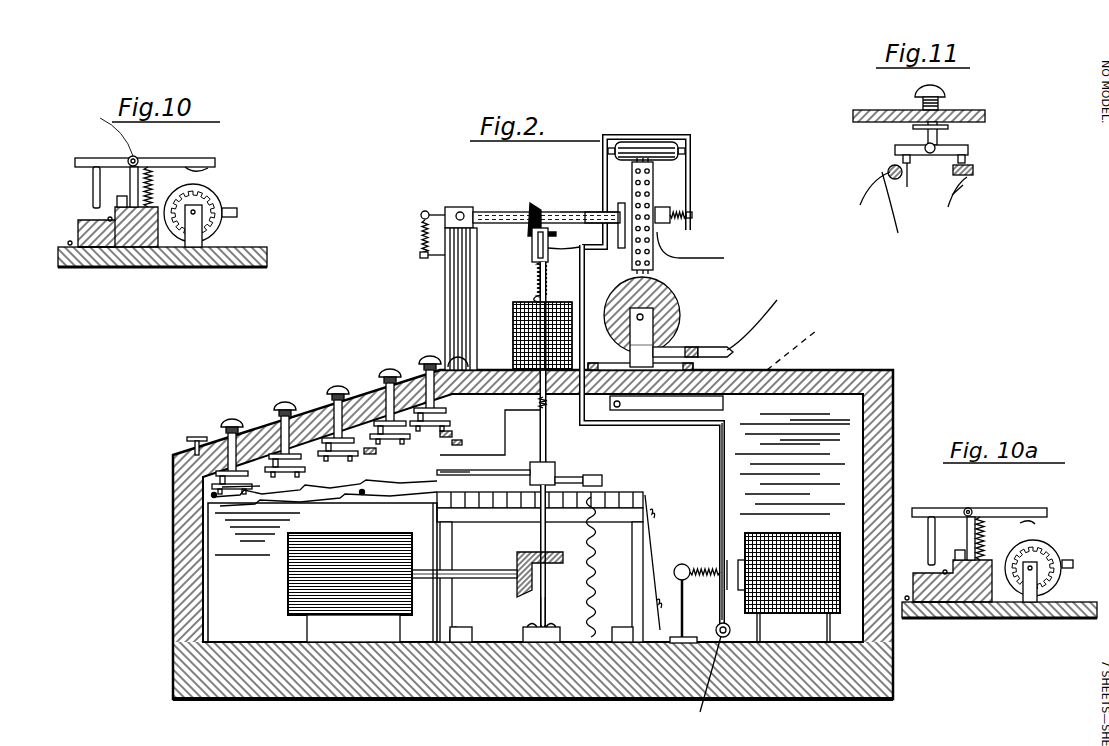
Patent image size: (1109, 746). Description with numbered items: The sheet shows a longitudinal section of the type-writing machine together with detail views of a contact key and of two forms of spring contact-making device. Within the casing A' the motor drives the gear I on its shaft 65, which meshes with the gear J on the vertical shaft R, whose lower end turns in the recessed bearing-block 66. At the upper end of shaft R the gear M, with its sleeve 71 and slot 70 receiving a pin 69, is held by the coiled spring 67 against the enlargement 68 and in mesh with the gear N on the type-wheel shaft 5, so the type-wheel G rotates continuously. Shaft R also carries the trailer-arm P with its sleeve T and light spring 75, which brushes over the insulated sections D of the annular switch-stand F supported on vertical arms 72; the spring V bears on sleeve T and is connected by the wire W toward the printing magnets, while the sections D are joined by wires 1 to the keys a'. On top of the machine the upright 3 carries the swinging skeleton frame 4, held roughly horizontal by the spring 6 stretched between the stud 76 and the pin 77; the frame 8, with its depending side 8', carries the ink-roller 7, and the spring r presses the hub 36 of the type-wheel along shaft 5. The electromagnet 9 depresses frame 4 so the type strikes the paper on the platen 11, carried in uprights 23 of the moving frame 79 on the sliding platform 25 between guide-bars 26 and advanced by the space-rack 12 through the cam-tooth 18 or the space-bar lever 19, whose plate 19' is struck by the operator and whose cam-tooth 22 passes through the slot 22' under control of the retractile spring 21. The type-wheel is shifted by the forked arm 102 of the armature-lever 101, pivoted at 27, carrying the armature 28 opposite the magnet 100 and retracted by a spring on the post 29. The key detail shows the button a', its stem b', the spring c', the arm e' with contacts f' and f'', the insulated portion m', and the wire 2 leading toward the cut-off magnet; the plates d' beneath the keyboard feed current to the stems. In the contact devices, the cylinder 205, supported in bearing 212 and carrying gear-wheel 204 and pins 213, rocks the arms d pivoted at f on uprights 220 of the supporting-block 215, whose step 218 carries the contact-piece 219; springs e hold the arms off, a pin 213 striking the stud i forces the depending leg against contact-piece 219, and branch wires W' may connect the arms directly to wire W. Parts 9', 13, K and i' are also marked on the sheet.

In FIG. 2, the casing A' is at (533, 710).
In FIG. 2, the supplementary frame 8 is at (633, 192).
In FIG. 2, the type-wheel shaft 5 is at (612, 213).
In FIG. 2, the forked arm 102 is at (620, 205).
In FIG. 2, the cam-shaped tooth 22 is at (668, 432).
In FIG. 2, the armature-lever 101 is at (726, 477).
In FIG. 2, the ink-roller 7 is at (650, 142).
In FIG. 2, the type-wheel G is at (655, 200).
In FIG. 2, the depending side of frame 8' is at (684, 210).
In FIG. 2, the spring r is at (670, 245).
In FIG. 2, the arbor or hub 36 is at (710, 259).
In FIG. 2, the guide block 9' is at (459, 204).
In FIG. 2, the swinging skeleton frame 4 is at (555, 212).
In FIG. 2, the gear N is at (541, 197).
In FIG. 2, the slot 70 is at (600, 224).
In FIG. 2, the projecting stud 76 is at (421, 214).
In FIG. 2, the spring 6 is at (420, 236).
In FIG. 2, the pin 77 is at (428, 258).
In FIG. 2, the upright frame 3 is at (445, 306).
In FIG. 2, the gear M is at (548, 225).
In FIG. 2, the sleeve 71 is at (532, 238).
In FIG. 2, the coiled spring 67 is at (537, 270).
In FIG. 2, the enlargement 68 is at (537, 296).
In FIG. 2, the pin 69 is at (565, 256).
In FIG. 2, the retractile spring 21 is at (553, 415).
In FIG. 2, the electromagnet 9 is at (532, 336).
In FIG. 2, the guide-bars 26 is at (605, 366).
In FIG. 2, the sliding platform 25 is at (640, 412).
In FIG. 2, the paper roller or platen 11 is at (676, 330).
In FIG. 2, the cam jaw or tooth 18 is at (641, 337).
In FIG. 2, the uprights 23 is at (641, 352).
In FIG. 2, the moving frame 79 is at (690, 347).
In FIG. 2, the space-rack 12 is at (706, 347).
In FIG. 2, the wire 13 is at (760, 319).
In FIG. 2, the slot 22' is at (806, 340).
In FIG. 2, the space-bar lever 19 is at (490, 432).
In FIG. 2, the trailer-arm P is at (537, 461).
In FIG. 2, the shaft R is at (556, 466).
In FIG. 2, the light spring 75 is at (515, 473).
In FIG. 2, the rotating sleeve T is at (562, 477).
In FIG. 2, the light spring V is at (604, 466).
In FIG. 2, the insulated segmental sections D is at (625, 492).
In FIG. 2, the annular switch-stand F is at (645, 515).
In FIG. 2, the gear J is at (541, 574).
In FIG. 2, the motor shaft 65 is at (464, 565).
In FIG. 2, the gear I is at (518, 609).
In FIG. 2, the vertical arms 72 is at (462, 627).
In FIG. 2, the bearing-block 66 is at (523, 632).
In FIG. 2, the wire W is at (604, 567).
In FIG. 2, the wires 1 is at (212, 578).
In FIG. 10, the wires 1 is at (68, 243).
In FIG. 11, the wires 1 is at (963, 190).
In FIG. 10A, the wires 1 is at (905, 596).
In FIG. 2, the post 29 is at (716, 627).
In FIG. 2, the pivot 27 is at (704, 682).
In FIG. 2, the armature 28 is at (735, 560).
In FIG. 2, the electromagnet 100 is at (818, 536).
In FIG. 2, the electromagnet K is at (322, 572).
In FIG. 2, the metallic plates d' is at (331, 425).
In FIG. 2, the bar or plate 19' is at (177, 444).
In FIG. 2, the insulated portion m' is at (324, 490).
In FIG. 11, the insulated portion m' is at (871, 160).
In FIG. 2, the laterally-extending arm e' is at (408, 442).
In FIG. 11, the laterally-extending arm e' is at (950, 154).
In FIG. 2, the depending contact f' is at (466, 444).
In FIG. 11, the depending contact f' is at (905, 184).
In FIG. 10, the branch wires W' is at (95, 128).
In FIG. 10, the bearing 212 is at (202, 264).
In FIG. 10A, the bearing 212 is at (1035, 618).
In FIG. 10, the supporting-block 215 is at (130, 258).
In FIG. 10A, the supporting-block 215 is at (980, 602).
In FIG. 10, the step 218 is at (104, 258).
In FIG. 10A, the step 218 is at (928, 618).
In FIG. 10, the uprights 220 is at (168, 262).
In FIG. 10, the contact-piece 219 is at (78, 230).
In FIG. 10A, the contact-piece 219 is at (938, 570).
In FIG. 10, the pivoted arm d is at (126, 163).
In FIG. 10A, the pivoted arm d is at (979, 496).
In FIG. 10, the pivot f is at (143, 170).
In FIG. 10A, the pivot f is at (981, 517).
In FIG. 10, the spring e is at (171, 169).
In FIG. 10A, the spring e is at (1002, 520).
In FIG. 10, the stud i is at (210, 165).
In FIG. 10A, the wire i' is at (1020, 530).
In FIG. 10, the gear-wheel 204 is at (222, 217).
In FIG. 10A, the gear-wheel 204 is at (1060, 572).
In FIG. 10, the cylinder 205 is at (225, 231).
In FIG. 10A, the cylinder 205 is at (1040, 558).
In FIG. 10, the projecting pins 213 is at (237, 210).
In FIG. 10A, the projecting pins 213 is at (1070, 560).
In FIG. 11, the depressible key a' is at (909, 112).
In FIG. 11, the spring c' is at (966, 117).
In FIG. 11, the stem b' is at (960, 130).
In FIG. 11, the depending contact f'' is at (985, 177).
In FIG. 11, the wire 2 is at (893, 209).